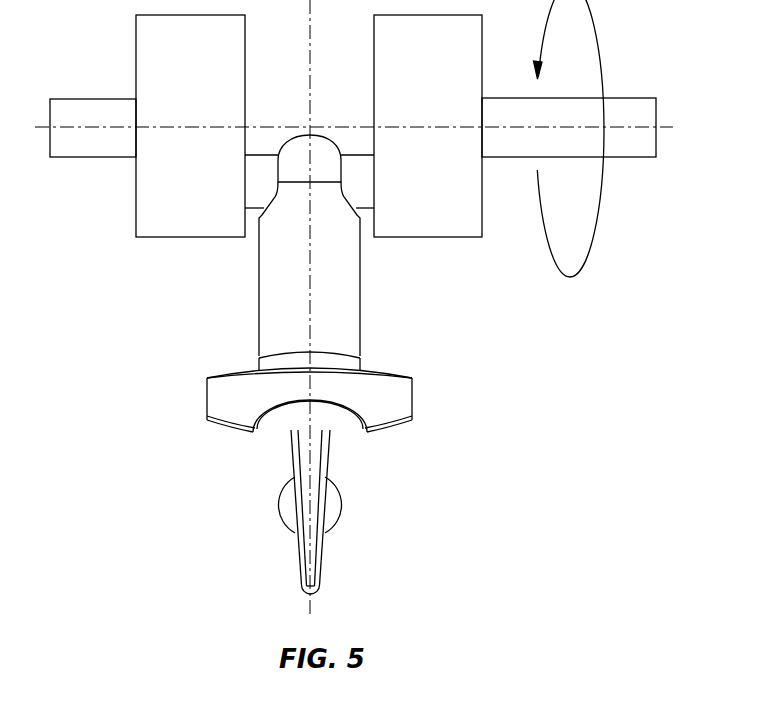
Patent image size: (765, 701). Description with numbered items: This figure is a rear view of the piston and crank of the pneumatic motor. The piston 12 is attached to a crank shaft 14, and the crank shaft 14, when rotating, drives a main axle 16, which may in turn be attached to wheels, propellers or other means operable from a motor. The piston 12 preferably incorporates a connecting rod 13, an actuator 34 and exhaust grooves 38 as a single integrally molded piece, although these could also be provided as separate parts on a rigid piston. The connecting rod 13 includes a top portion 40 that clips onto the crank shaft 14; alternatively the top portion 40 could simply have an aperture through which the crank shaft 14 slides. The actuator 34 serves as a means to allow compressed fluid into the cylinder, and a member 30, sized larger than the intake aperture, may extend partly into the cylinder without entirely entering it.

The piston 12 is at (309, 341).
The connecting rod 13 is at (306, 270).
The crank shaft 14 is at (262, 170).
The main axle 16 is at (640, 101).
The member 30 is at (343, 508).
The actuator 34 is at (300, 556).
The exhaust grooves 38 is at (281, 430).
The top portion 40 is at (322, 157).